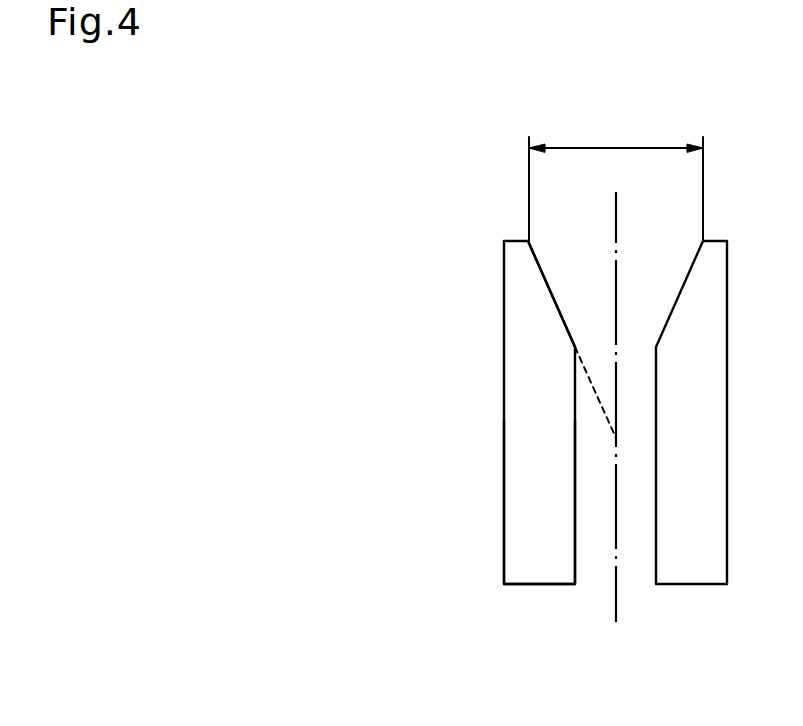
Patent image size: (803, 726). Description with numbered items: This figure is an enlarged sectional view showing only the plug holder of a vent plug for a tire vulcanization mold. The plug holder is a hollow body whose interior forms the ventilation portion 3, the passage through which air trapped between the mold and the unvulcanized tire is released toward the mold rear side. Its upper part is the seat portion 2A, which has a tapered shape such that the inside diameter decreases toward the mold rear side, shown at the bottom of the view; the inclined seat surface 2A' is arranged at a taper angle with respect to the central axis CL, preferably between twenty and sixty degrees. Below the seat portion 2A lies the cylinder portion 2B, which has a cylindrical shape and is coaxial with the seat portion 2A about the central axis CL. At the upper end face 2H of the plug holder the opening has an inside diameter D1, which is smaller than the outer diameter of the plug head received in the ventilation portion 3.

The seat portion 2A is at (491, 412).
The cylinder portion 2B is at (517, 525).
The seat surface 2A' is at (566, 269).
The upper end face of the plug holder 2H is at (715, 237).
The ventilation portion 3 is at (593, 572).
The central axis CL is at (617, 208).
The inside diameter at the upper end face of the plug holder D1 is at (616, 175).